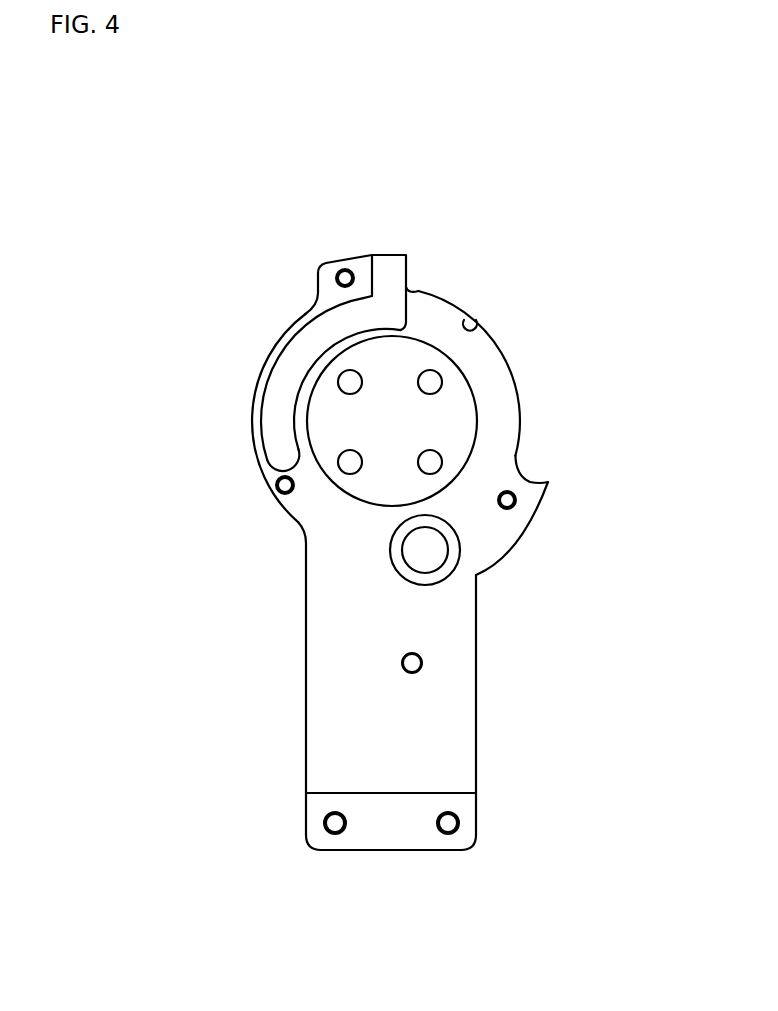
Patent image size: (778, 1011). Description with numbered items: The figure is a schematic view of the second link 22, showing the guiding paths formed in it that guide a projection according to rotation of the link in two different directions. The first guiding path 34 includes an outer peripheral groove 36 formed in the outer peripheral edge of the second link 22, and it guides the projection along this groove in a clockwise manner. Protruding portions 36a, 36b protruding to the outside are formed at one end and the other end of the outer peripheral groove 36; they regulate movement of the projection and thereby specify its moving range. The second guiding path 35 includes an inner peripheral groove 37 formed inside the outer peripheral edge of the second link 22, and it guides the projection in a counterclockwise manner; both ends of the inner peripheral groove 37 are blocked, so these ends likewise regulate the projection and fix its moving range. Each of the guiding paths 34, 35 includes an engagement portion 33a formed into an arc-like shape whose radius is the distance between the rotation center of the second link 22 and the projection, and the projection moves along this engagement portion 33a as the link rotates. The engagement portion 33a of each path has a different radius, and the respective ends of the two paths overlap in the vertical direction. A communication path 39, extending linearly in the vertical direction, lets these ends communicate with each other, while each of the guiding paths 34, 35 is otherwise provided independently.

The second link 22 is at (478, 740).
The engagement portion 33a is at (295, 425).
The first guiding path 34 is at (524, 378).
The second guiding path 35 is at (258, 394).
The outer peripheral groove 36 is at (474, 332).
The protruding portion 36a is at (372, 266).
The protruding portion 36b is at (541, 479).
The inner peripheral groove 37 is at (316, 360).
The communication path 39 is at (421, 271).